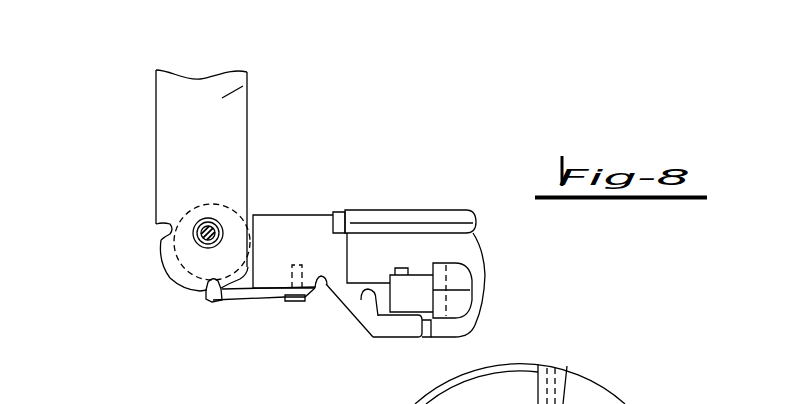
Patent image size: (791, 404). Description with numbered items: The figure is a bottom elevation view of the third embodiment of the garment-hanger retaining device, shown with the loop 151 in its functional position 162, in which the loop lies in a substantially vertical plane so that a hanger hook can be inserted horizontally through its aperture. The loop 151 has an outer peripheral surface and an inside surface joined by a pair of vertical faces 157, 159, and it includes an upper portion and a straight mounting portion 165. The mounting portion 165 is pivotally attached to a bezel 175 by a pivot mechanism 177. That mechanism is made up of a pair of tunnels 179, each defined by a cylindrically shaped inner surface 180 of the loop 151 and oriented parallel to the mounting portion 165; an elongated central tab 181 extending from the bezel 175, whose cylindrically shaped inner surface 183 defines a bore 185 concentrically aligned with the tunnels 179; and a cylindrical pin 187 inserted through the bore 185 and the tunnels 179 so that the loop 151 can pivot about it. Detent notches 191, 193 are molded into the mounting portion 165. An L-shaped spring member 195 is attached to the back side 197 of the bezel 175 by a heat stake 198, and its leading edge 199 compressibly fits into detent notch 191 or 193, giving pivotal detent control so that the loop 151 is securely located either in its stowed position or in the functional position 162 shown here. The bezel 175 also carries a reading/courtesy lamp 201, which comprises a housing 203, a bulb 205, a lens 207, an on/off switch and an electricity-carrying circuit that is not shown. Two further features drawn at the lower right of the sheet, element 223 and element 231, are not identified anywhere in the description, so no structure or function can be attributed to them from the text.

The functional position 162 is at (247, 66).
The vertical face 157 is at (156, 82).
The loop 151 is at (247, 74).
The vertical face 159 is at (247, 130).
The detent notch 191 is at (160, 226).
The tunnel 179 is at (200, 250).
The pin 187 is at (199, 256).
The mounting portion 165 is at (205, 289).
The detent notch 193 is at (193, 293).
The pivot mechanism 177 is at (213, 300).
The spring member 195 is at (258, 300).
The heat stake 198 is at (290, 302).
The back side 197 is at (318, 292).
The housing 203 is at (367, 340).
The leading edge 199 is at (253, 286).
The bezel 175 is at (319, 229).
The lens 207 is at (447, 168).
The reading/courtesy lamp 201 is at (468, 267).
The bulb 205 is at (467, 291).
The central tab 181 is at (243, 203).
The bore 185 is at (210, 217).
The inner surface 183 is at (199, 221).
The inner surface 180 is at (195, 238).
The slot 231 is at (566, 378).
The drum 223 is at (619, 398).